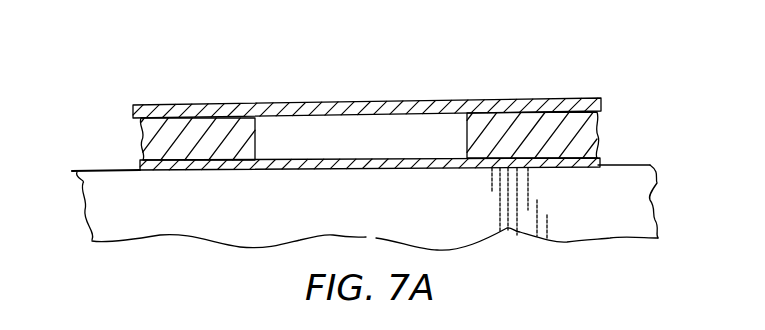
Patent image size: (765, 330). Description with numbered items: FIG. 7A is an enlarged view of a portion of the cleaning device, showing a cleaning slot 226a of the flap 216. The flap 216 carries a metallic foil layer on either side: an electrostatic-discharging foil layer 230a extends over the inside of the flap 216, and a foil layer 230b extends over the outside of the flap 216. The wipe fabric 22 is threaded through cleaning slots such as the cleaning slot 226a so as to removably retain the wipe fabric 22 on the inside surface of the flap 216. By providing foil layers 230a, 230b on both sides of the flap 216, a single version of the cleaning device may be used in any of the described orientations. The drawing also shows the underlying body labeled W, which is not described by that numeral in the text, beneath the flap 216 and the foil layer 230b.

The workpiece W is at (105, 176).
The wipe fabric 22 is at (367, 101).
The cleaning slot 226a is at (307, 135).
The foil layer 230a is at (405, 100).
The foil layer 230b is at (413, 163).
The flap 216 is at (540, 130).